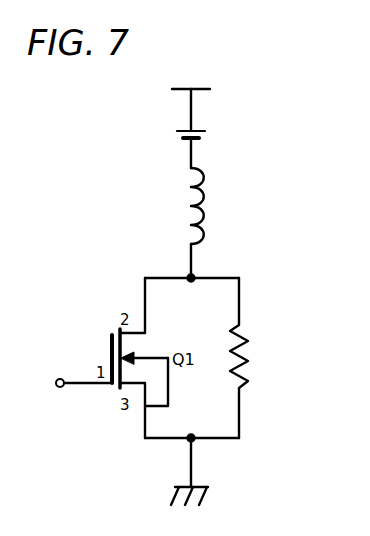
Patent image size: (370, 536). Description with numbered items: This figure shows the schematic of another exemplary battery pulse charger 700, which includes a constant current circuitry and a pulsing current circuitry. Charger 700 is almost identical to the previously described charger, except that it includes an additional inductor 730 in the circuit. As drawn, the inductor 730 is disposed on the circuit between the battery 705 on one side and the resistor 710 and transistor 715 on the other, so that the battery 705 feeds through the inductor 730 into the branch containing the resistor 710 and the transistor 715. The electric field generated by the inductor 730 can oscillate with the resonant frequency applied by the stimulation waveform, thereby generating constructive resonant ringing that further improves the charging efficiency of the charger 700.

The battery pulse charger 700 is at (112, 143).
The battery 705 is at (243, 139).
The resistor 710 is at (288, 357).
The transistor 715 is at (180, 380).
The inductor 730 is at (237, 211).